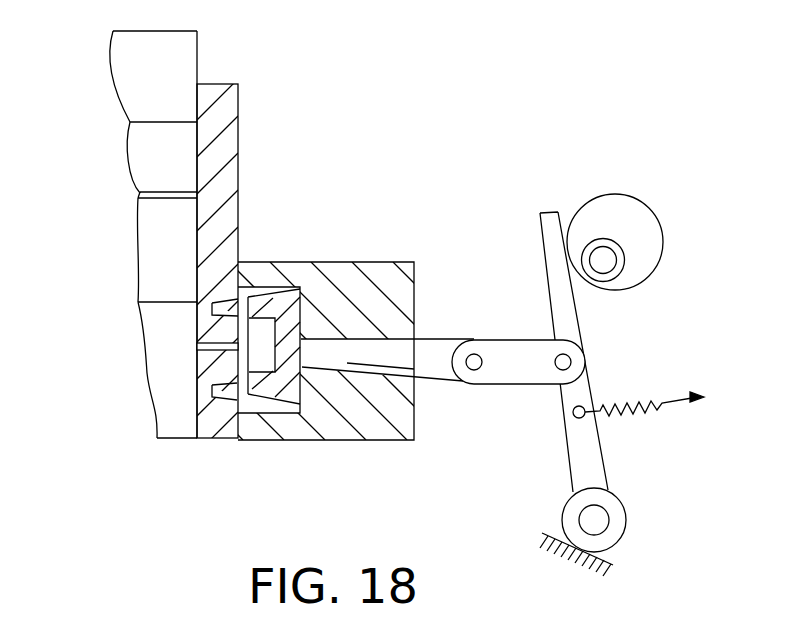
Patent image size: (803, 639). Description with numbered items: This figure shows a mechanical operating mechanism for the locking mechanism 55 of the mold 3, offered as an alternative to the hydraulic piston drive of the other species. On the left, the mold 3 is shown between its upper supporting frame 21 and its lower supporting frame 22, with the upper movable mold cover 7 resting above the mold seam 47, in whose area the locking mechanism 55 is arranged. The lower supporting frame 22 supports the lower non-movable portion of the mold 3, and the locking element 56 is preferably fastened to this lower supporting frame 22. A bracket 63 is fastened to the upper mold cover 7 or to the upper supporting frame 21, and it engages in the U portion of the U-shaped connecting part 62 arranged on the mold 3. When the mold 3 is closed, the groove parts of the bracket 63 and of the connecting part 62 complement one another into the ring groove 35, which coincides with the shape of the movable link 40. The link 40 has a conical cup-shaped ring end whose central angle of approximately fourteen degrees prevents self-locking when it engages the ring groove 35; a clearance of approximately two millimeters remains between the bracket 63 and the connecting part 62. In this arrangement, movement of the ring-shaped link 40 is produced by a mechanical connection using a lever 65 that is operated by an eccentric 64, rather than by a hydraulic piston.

The upper supporting frame 21 is at (127, 82).
The upper movable mold cover 7 is at (140, 152).
The mold seam 47 is at (130, 203).
The mold 3 is at (148, 272).
The lower supporting frame 22 is at (158, 373).
The bracket 63 is at (240, 112).
The ring groove 35 is at (232, 410).
The locking element 56 is at (378, 256).
The movable link 40 is at (272, 387).
The U-shaped connecting part 62 is at (285, 298).
The locking mechanism 55 is at (440, 348).
The eccentric 64 is at (647, 233).
The lever 65 is at (595, 460).